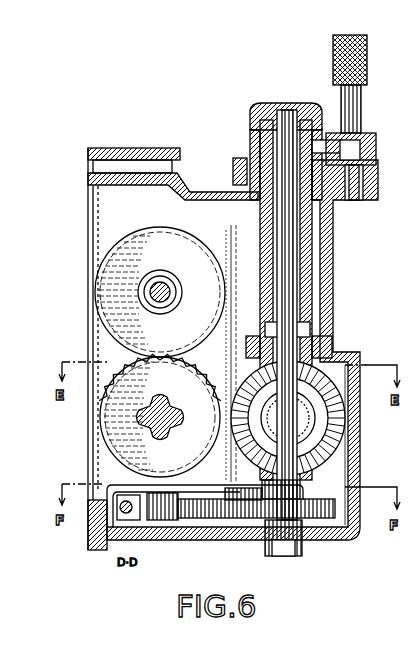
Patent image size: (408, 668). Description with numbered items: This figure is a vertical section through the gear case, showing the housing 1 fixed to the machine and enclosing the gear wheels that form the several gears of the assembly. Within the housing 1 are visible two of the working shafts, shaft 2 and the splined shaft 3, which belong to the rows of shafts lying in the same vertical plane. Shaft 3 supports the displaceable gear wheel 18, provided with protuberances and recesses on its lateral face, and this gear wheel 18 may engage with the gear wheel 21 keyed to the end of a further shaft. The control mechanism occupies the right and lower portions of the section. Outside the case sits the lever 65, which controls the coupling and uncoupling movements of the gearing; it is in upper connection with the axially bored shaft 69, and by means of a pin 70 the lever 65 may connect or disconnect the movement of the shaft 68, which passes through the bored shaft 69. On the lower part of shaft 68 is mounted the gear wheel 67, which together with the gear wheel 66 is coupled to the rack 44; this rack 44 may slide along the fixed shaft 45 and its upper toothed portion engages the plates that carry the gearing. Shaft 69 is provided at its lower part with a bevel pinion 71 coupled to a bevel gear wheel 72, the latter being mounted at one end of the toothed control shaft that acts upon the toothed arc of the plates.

The housing 1 is at (333, 313).
The shaft 2 is at (165, 284).
The shaft 3 is at (180, 417).
The displaceable gear wheel 18 is at (201, 378).
The gear wheel 21 is at (150, 238).
The rack 44 is at (170, 520).
The fixed shaft 45 is at (129, 514).
The lever 65 is at (366, 75).
The gear wheel 66 is at (196, 518).
The gear wheel 67 is at (322, 522).
The shaft 68 is at (283, 279).
The axially bored shaft 69 is at (260, 241).
The pin 70 is at (337, 118).
The bevel pinion 71 is at (318, 368).
The bevel gear wheel 72 is at (318, 450).